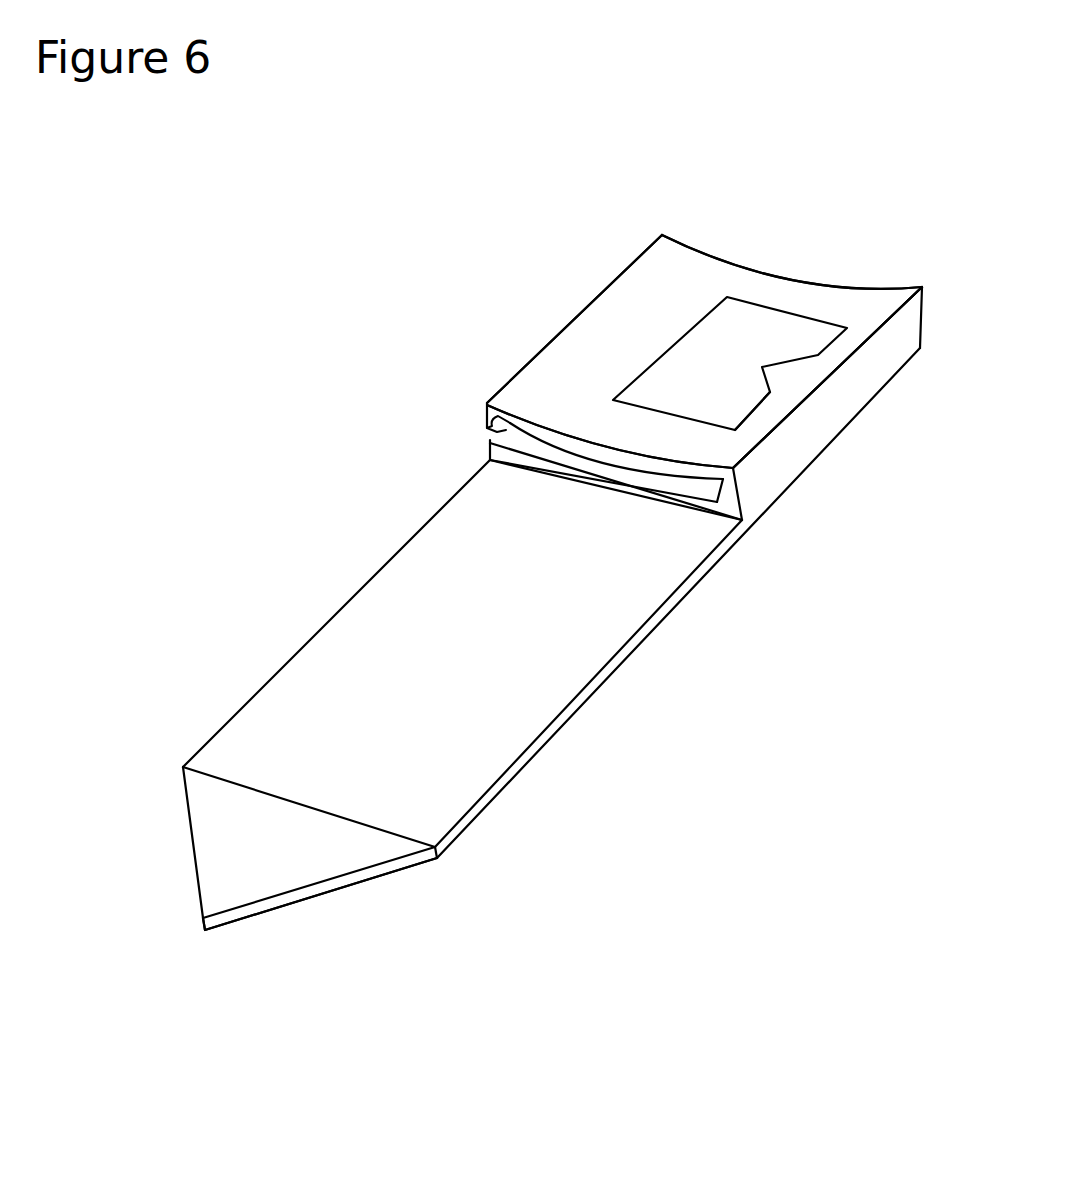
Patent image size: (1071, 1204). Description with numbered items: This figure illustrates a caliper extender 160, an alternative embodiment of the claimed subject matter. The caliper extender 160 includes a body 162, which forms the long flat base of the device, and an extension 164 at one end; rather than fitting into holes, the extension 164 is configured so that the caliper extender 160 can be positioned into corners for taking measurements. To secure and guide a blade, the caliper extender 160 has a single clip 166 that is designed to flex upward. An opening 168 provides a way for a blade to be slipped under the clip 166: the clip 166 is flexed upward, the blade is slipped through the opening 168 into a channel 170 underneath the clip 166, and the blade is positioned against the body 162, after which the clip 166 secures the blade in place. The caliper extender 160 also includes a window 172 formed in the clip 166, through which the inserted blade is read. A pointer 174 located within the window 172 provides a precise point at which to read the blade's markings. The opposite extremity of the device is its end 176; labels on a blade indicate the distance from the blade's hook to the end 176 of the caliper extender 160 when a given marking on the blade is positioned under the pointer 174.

The caliper extender 160 is at (548, 200).
The body 162 is at (400, 763).
The extension 164 is at (282, 840).
The clip 166 is at (632, 355).
The opening 168 is at (487, 437).
The channel 170 is at (692, 493).
The window 172 is at (768, 333).
The pointer 174 is at (782, 375).
The end 176 is at (205, 930).